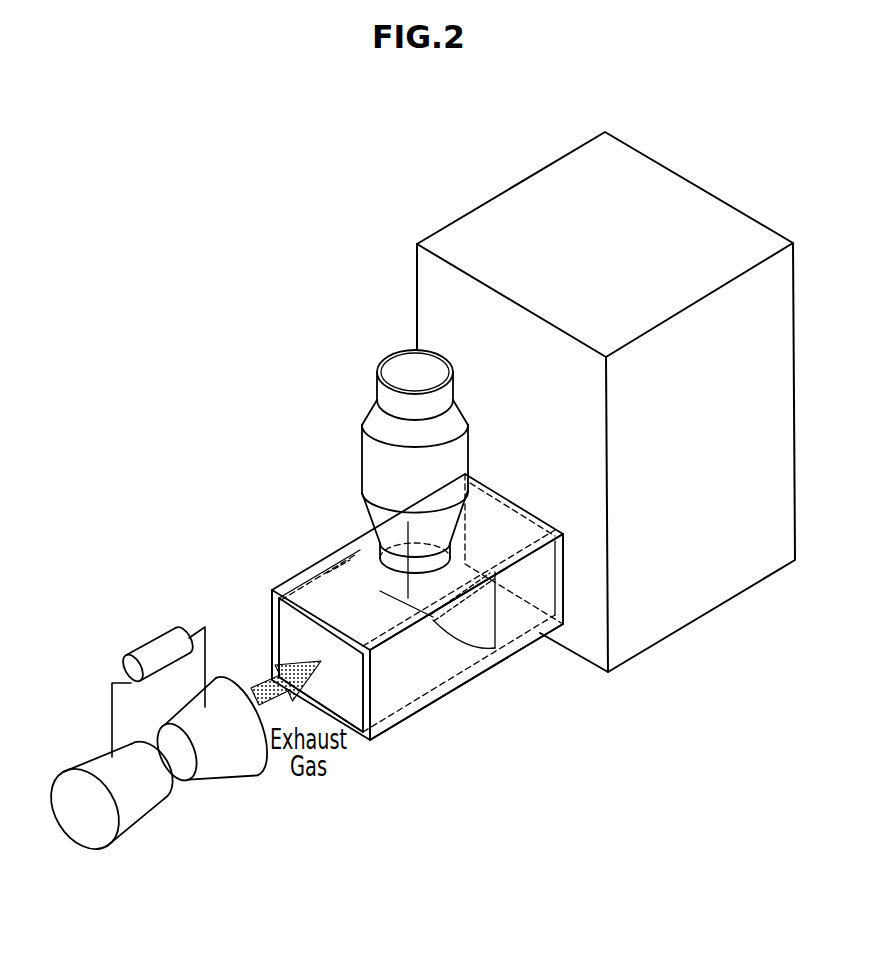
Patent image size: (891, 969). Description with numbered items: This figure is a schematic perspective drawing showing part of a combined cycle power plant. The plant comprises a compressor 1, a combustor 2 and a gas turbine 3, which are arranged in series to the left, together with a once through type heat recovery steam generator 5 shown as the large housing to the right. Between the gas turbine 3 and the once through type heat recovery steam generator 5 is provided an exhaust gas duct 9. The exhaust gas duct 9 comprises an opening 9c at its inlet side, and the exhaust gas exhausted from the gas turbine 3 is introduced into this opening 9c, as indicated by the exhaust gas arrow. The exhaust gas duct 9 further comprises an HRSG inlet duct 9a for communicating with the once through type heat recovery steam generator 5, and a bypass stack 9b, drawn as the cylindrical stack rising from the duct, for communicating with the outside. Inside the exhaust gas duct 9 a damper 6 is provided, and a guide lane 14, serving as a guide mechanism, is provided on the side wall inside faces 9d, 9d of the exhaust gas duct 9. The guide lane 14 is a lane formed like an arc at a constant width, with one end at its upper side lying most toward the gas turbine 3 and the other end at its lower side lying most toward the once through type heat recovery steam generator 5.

The compressor 1 is at (133, 815).
The combustor 2 is at (157, 644).
The gas turbine 3 is at (222, 760).
The once through type heat recovery steam generator 5 is at (753, 397).
The damper 6 is at (427, 624).
The exhaust gas duct 9 is at (490, 667).
The HRSG inlet duct 9a is at (515, 612).
The bypass stack 9b is at (375, 462).
The opening 9c is at (348, 700).
The side wall inside face 9d is at (290, 632).
The guide lane 14 is at (330, 578).